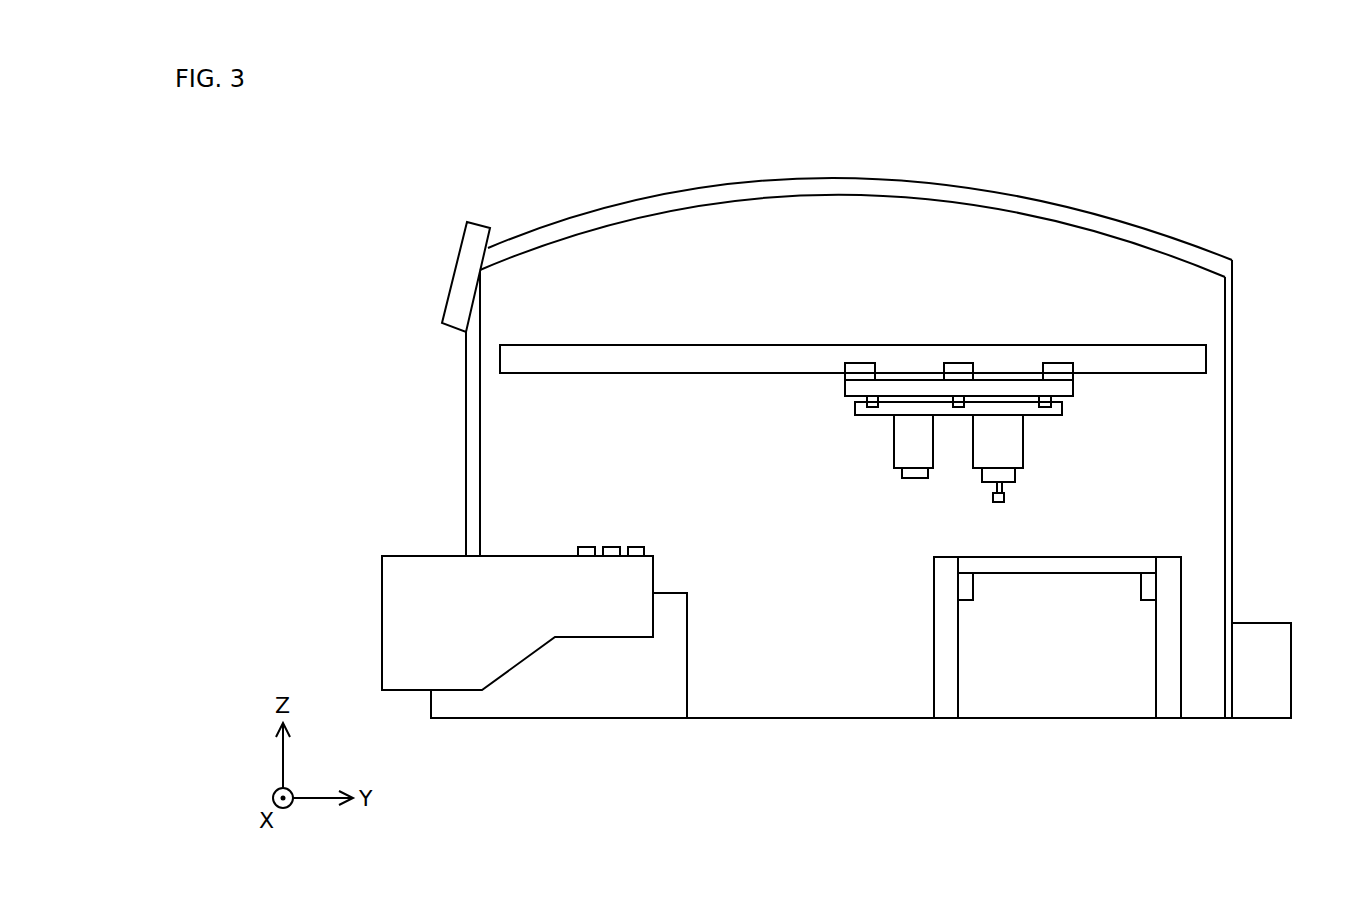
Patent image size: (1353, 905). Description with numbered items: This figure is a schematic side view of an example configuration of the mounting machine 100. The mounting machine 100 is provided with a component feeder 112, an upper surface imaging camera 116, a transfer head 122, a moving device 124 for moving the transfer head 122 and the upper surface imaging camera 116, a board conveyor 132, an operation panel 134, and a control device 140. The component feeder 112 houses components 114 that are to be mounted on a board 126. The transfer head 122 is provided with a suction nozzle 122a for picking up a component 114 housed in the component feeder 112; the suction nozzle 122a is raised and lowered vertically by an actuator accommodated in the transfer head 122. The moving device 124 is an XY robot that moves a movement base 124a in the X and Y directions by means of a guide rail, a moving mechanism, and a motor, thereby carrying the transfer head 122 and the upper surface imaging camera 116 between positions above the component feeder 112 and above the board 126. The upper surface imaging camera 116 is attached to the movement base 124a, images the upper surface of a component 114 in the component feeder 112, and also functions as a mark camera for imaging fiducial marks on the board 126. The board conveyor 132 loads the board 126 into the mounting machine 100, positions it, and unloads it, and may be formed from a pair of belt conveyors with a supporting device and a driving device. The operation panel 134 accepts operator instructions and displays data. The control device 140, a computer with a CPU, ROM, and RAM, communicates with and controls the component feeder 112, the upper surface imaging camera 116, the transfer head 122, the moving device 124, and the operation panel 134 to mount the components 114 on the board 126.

The mounting machine 100 is at (1150, 145).
The component feeder 112 is at (431, 555).
The component 114 is at (1005, 495).
The upper surface imaging camera 116 is at (892, 442).
The transfer head 122 is at (1025, 442).
The suction nozzle 122a is at (992, 486).
The moving device 124 is at (1002, 357).
The movement base 124a is at (1063, 409).
The board 126 is at (1118, 557).
The board conveyor 132 is at (947, 708).
The operation panel 134 is at (453, 272).
The control device 140 is at (1260, 722).